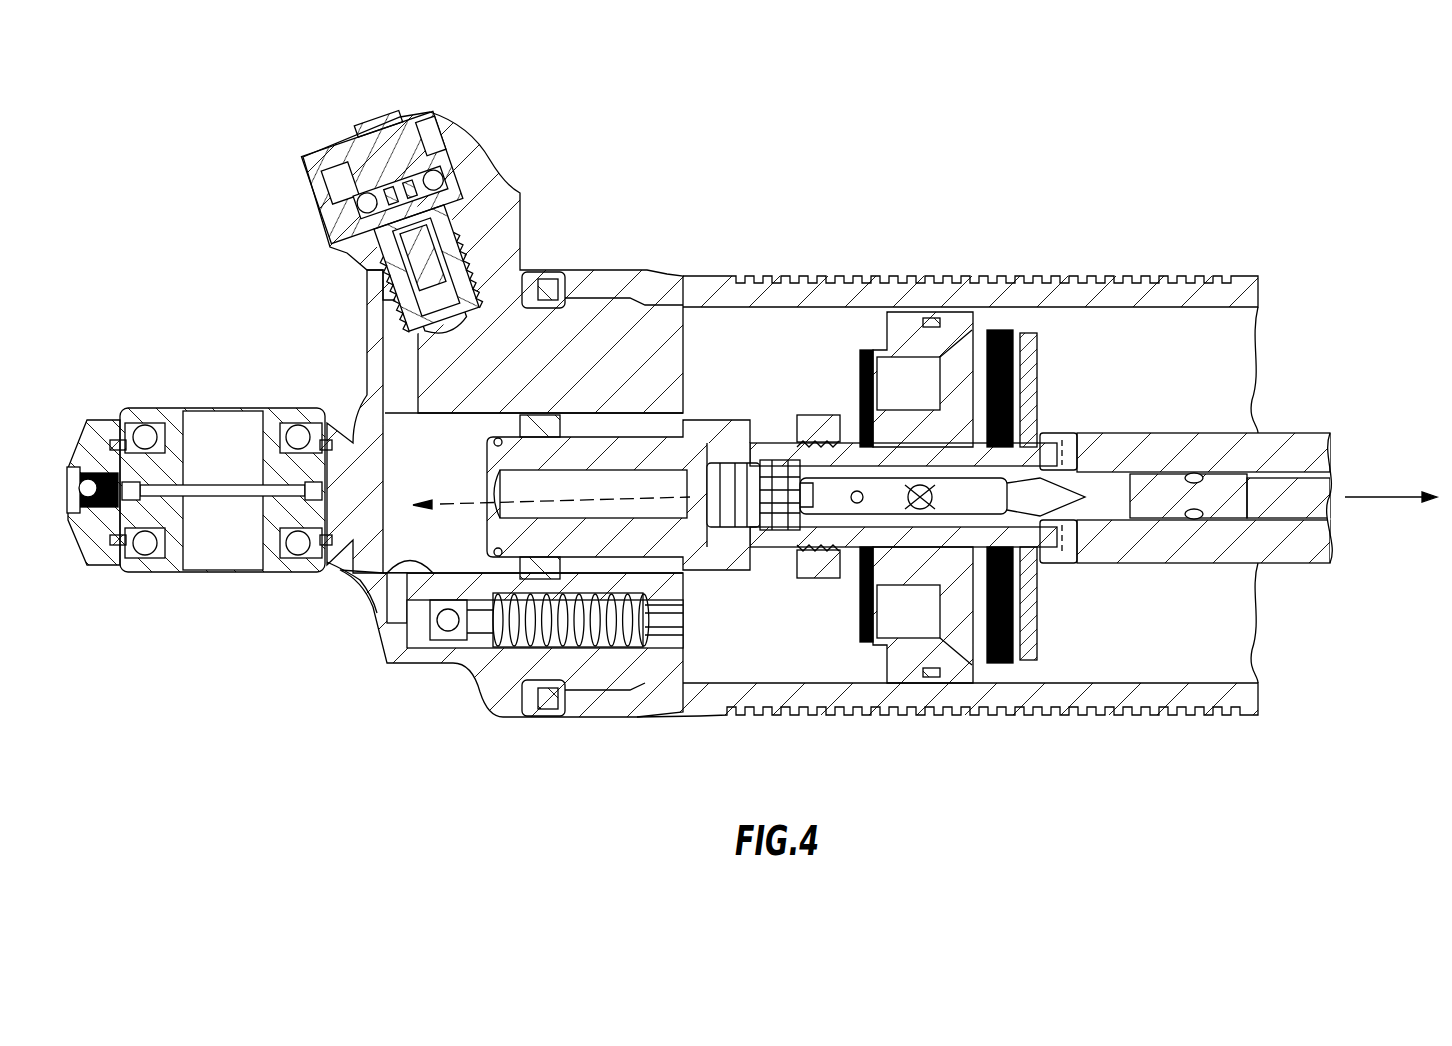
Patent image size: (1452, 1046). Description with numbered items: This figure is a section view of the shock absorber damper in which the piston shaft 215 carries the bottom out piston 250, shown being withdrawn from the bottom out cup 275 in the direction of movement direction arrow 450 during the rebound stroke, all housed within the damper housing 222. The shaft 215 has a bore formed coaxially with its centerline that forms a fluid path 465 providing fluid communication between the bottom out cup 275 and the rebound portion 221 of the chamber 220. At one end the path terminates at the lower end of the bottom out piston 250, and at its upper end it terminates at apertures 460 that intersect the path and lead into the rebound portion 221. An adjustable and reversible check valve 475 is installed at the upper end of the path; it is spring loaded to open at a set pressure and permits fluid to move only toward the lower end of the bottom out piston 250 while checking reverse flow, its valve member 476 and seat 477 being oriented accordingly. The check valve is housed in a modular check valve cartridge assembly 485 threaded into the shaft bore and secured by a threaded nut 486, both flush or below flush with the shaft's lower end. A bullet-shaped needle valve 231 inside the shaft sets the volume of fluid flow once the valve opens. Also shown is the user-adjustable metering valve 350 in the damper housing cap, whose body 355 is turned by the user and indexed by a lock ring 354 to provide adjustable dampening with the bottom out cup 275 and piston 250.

The housing 222 is at (753, 655).
The chamber 220 is at (828, 655).
The rebound portion 221 is at (1160, 655).
The bottom out piston 250 is at (545, 605).
The fluid path 465 is at (462, 496).
The threaded nut 486 is at (728, 470).
The piston shaft 215 is at (777, 483).
The check valve cartridge assembly 485 is at (770, 472).
The check valve 475 is at (850, 515).
The seat 477 is at (1012, 396).
The valve member 476 is at (1012, 625).
The needle valve 231 is at (1080, 500).
The aperture 460 is at (1063, 450).
The movement direction arrow 450 is at (1397, 495).
The bottom out cup 275 is at (385, 568).
The metering valve 350 is at (417, 208).
The lock ring 354 is at (447, 157).
The body 355 is at (418, 235).